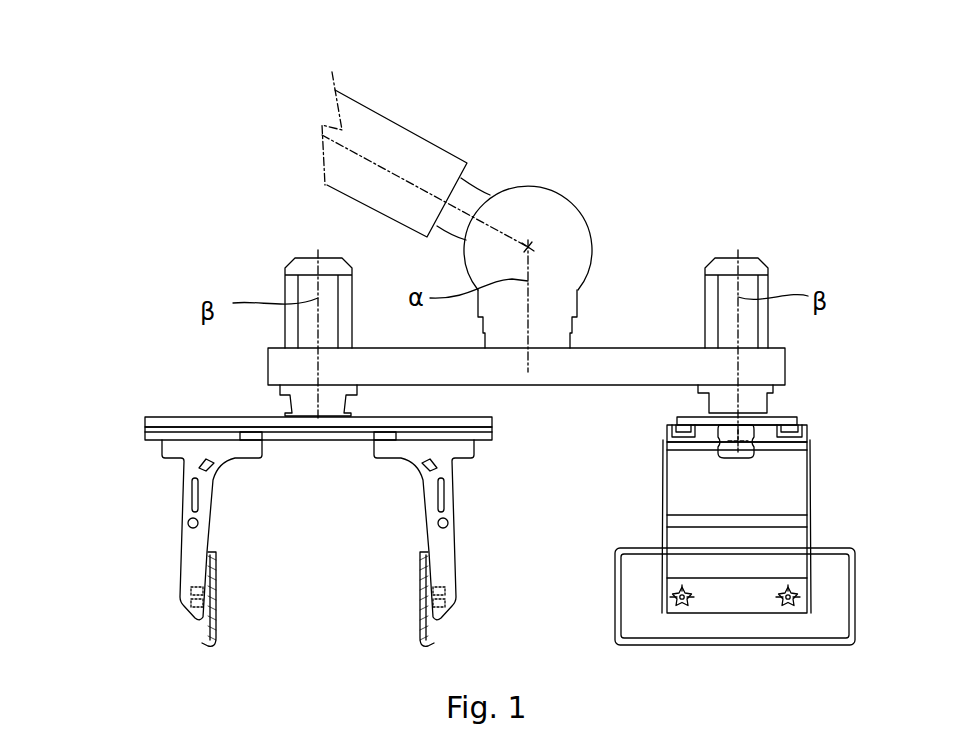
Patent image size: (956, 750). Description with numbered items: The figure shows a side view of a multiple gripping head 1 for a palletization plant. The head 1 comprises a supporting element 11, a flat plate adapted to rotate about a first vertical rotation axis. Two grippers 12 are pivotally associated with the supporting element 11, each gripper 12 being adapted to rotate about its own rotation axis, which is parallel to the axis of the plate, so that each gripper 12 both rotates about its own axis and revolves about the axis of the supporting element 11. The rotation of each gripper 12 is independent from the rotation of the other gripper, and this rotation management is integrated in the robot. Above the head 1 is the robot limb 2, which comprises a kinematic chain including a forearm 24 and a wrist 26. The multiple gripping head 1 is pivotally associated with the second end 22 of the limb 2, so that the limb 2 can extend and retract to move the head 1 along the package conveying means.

The multiple gripping head 1 is at (562, 319).
The limb 2 is at (467, 190).
The supporting element 11 is at (775, 368).
The gripper 12 is at (800, 490).
The second end 22 is at (525, 217).
The forearm 24 is at (398, 148).
The wrist 26 is at (510, 170).